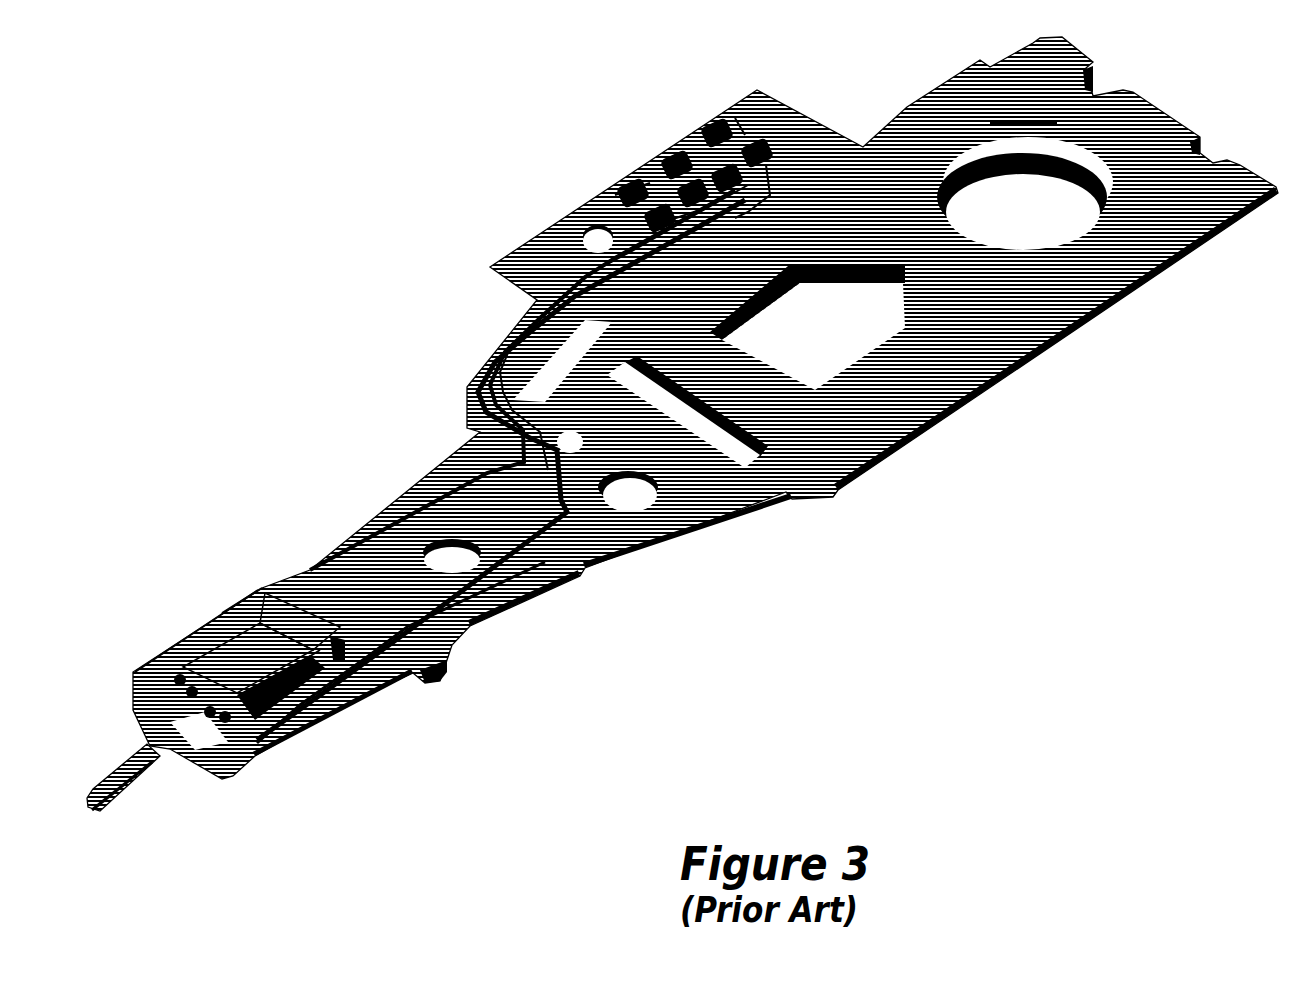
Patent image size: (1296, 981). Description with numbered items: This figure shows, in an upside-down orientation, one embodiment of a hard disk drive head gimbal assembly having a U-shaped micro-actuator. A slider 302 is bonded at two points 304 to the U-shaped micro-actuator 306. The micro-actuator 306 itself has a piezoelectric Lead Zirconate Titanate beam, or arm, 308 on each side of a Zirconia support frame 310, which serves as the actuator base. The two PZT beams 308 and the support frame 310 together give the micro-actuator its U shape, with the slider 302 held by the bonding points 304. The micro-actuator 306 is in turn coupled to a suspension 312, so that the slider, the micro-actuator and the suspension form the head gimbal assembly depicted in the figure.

The slider 302 is at (250, 643).
The bonding points 304 is at (177, 680).
The U-shaped micro-actuator 306 is at (310, 630).
The piezoelectric PZT beam 308 is at (220, 613).
The Zirconia support frame 310 is at (292, 617).
The suspension 312 is at (993, 323).